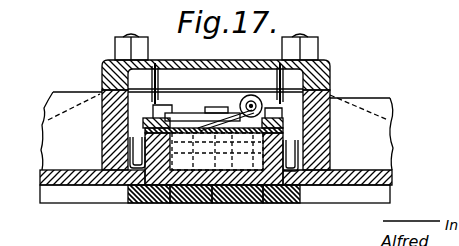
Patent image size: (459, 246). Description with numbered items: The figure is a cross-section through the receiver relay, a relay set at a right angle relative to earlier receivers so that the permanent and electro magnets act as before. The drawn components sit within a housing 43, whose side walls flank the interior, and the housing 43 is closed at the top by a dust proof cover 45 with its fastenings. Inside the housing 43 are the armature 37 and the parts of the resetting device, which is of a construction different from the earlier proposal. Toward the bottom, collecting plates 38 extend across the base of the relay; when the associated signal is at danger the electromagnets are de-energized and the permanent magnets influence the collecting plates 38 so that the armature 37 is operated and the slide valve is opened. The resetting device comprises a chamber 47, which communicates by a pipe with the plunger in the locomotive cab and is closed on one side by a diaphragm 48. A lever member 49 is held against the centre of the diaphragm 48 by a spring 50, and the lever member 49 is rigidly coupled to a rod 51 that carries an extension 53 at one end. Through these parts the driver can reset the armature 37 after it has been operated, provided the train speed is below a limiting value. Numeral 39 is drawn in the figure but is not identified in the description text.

The armature 37 is at (300, 126).
The collecting plates 38 is at (40, 197).
The strip section 39 is at (297, 197).
The housing 43 is at (330, 160).
The dust proof cover 45 is at (104, 74).
The chamber 47 is at (187, 165).
The diaphragm 48 is at (103, 132).
The lever member 49 is at (212, 186).
The spring 50 is at (217, 113).
The rod 51 is at (304, 90).
The extension 53 is at (263, 186).